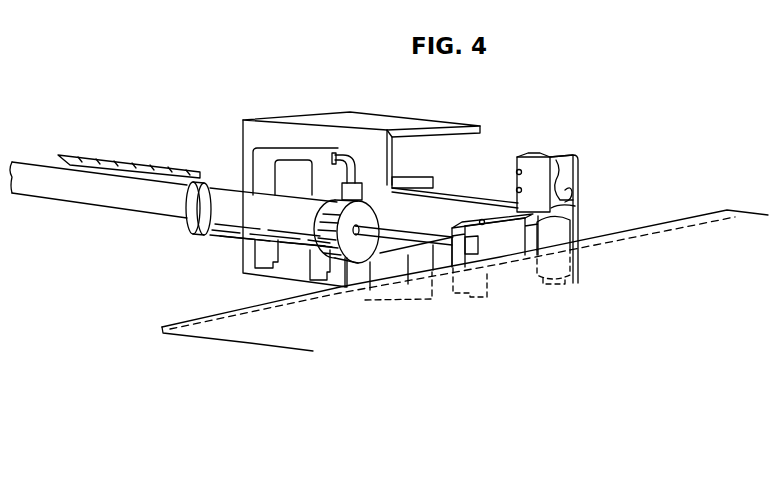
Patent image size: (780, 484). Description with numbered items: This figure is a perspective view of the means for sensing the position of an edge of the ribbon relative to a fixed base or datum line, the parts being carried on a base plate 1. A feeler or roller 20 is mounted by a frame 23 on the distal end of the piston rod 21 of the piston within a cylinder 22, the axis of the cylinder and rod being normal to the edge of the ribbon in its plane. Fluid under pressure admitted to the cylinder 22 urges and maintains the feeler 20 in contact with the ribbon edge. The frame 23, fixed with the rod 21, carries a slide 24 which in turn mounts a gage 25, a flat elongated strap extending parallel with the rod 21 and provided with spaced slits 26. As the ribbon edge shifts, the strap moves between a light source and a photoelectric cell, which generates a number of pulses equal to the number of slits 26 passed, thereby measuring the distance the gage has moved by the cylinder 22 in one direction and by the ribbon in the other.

The base plate 1 is at (683, 228).
The feeler 20 is at (578, 224).
The piston rod 21 is at (402, 236).
The cylinder 22 is at (235, 221).
The frame 23 is at (463, 256).
The slide 24 is at (467, 202).
The gage 25 is at (177, 170).
The slits 26 is at (148, 163).